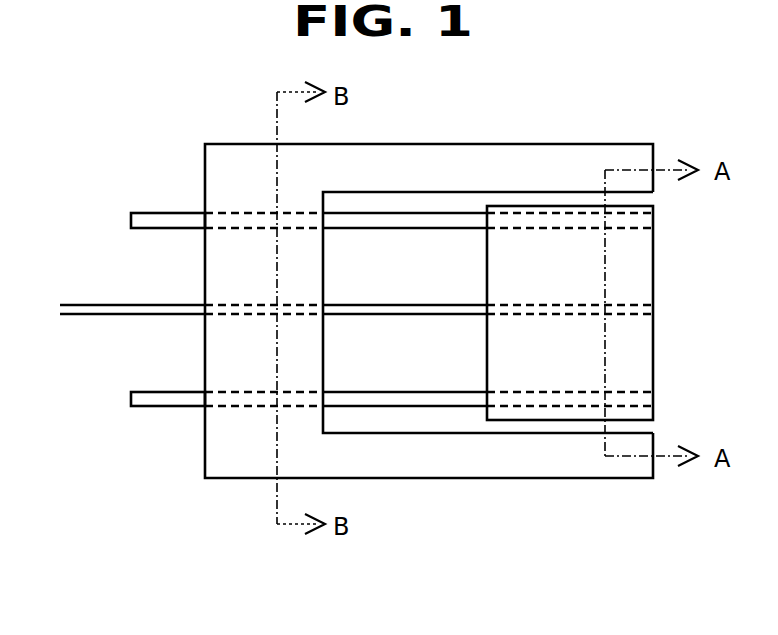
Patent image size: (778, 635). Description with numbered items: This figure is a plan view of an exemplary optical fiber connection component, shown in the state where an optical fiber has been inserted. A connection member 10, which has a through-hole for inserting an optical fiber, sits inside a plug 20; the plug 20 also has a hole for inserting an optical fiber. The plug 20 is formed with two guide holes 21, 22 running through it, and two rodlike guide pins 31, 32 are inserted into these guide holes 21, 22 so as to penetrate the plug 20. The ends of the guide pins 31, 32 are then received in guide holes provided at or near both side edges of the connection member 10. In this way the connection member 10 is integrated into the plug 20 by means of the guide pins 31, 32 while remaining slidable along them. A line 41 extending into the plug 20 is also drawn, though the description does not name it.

The connection member 10 is at (653, 272).
The plug 20 is at (474, 165).
The guide hole 21 is at (240, 212).
The guide hole 22 is at (237, 407).
The guide pin 31 is at (160, 212).
The guide pin 32 is at (158, 392).
The wire / conductor 41 is at (92, 305).